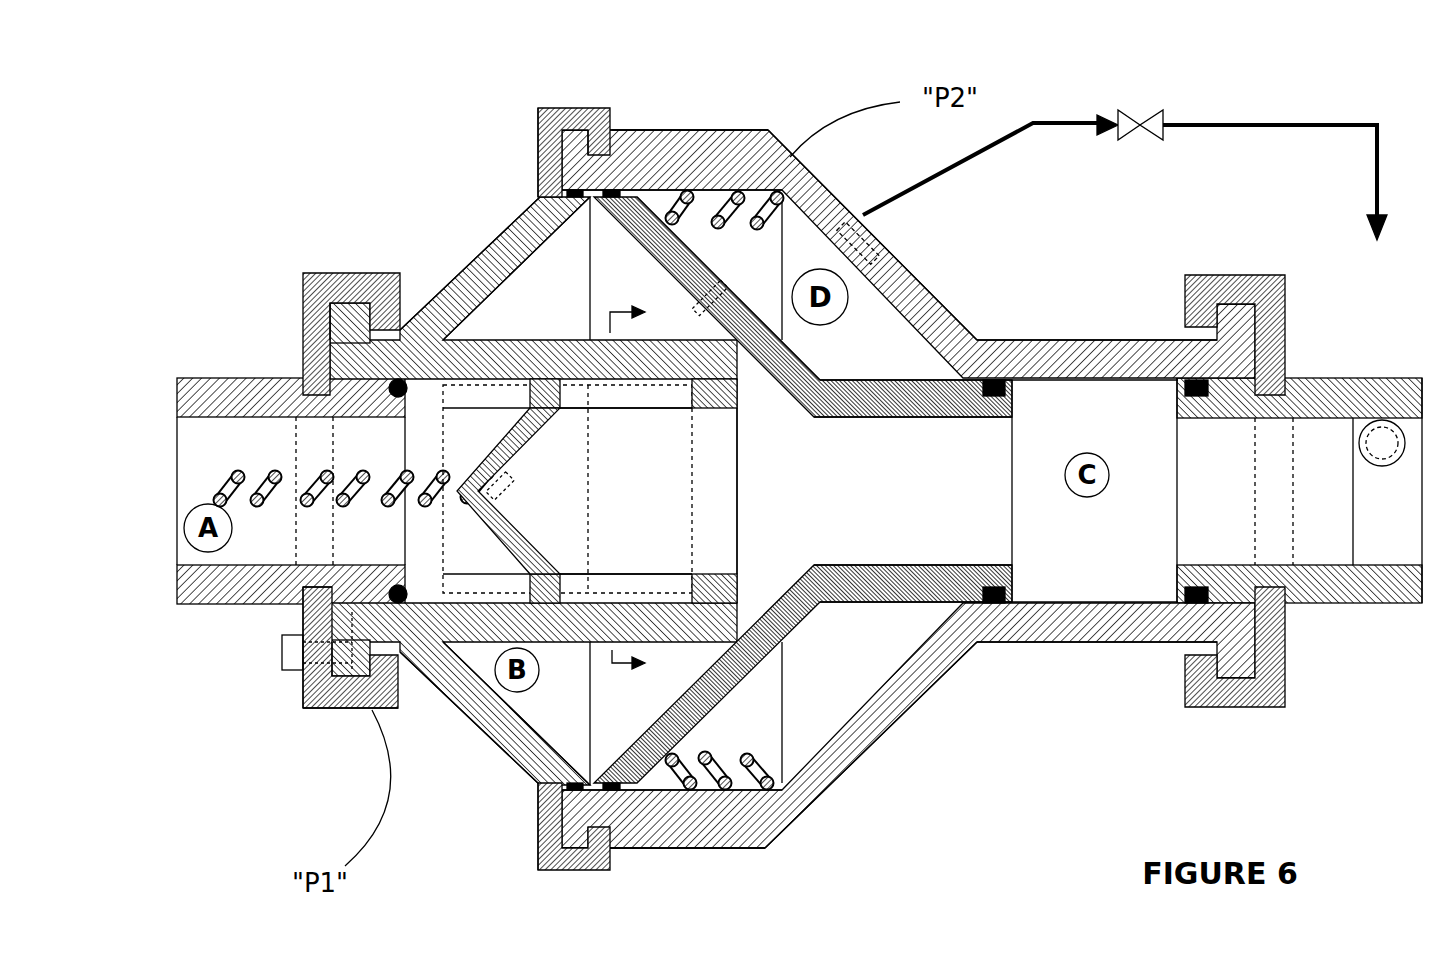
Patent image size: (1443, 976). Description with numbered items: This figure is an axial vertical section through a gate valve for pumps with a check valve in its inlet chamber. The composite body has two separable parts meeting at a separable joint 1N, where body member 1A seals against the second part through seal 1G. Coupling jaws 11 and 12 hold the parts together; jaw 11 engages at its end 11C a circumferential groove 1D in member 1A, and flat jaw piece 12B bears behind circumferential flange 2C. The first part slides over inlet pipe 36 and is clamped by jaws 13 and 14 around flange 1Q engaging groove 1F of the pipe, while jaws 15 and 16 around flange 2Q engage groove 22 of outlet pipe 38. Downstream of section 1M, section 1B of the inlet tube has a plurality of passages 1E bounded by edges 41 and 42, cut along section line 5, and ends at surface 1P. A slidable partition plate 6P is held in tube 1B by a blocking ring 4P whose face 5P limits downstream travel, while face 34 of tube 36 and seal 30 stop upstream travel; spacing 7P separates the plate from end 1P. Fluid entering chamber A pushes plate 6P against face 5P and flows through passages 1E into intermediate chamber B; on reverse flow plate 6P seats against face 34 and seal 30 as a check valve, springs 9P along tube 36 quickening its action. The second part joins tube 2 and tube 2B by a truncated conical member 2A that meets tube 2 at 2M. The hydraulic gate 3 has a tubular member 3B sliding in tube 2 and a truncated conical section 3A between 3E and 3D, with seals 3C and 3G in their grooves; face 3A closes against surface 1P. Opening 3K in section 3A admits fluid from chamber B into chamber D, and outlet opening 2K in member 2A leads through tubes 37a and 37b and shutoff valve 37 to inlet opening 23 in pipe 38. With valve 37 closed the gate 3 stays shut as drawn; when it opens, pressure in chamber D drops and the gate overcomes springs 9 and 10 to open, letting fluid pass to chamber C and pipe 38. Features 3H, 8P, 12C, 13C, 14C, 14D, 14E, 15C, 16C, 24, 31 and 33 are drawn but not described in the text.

The body member 1A is at (470, 690).
The tube section 1B is at (563, 640).
The circumferential groove 1D is at (533, 227).
The passages 1E is at (513, 418).
The circumferential groove 1F is at (297, 600).
The seal 1G is at (580, 763).
The tube section 1M is at (447, 337).
The separable joint 1N is at (583, 208).
The end surface 1P is at (742, 345).
The flange 1Q is at (335, 355).
The tube 2 is at (1052, 352).
The truncated conical member 2A is at (945, 318).
The tube 2B is at (748, 130).
The circumferential flange 2C is at (575, 140).
The outlet opening 2K is at (880, 252).
The tube end 2M is at (985, 340).
The flange 2Q is at (1252, 310).
The hydraulic gate 3 is at (822, 398).
The truncated conical section 3A is at (667, 703).
The tubular member 3B is at (985, 420).
The seal 3C is at (612, 208).
The end of conical section 3D is at (637, 160).
The end of conical section 3E is at (823, 372).
The seal 3G is at (987, 583).
The sleeve end 3H is at (1018, 410).
The opening 3K is at (712, 280).
The blocking ring 4P is at (740, 440).
The section line 5 is at (637, 489).
The face of blocking ring 5P is at (705, 405).
The slidable partition plate 6P is at (530, 440).
The distance 7P is at (573, 577).
The piston rod lower 8P is at (525, 585).
The spring 9 is at (683, 205).
The spring 9P is at (240, 494).
The spring 10 is at (700, 757).
The jaw member 11 is at (588, 110).
The jaw end 11C is at (545, 150).
The jaw member 12 is at (537, 848).
The flat jaw piece 12B is at (612, 856).
The lower clamp flange lip 12C is at (540, 765).
The coupling jaw 13 is at (310, 282).
The left flange bore line 13C is at (313, 420).
The coupling jaw 14 is at (335, 700).
The left flange inner face 14C is at (317, 590).
The flange bolt 14D is at (300, 660).
The flange bottom face 14E is at (310, 698).
The coupling jaw 15 is at (1233, 272).
The right flange bore line 15C is at (1268, 400).
The coupling jaw 16 is at (1250, 708).
The right flange bore line 16C is at (1262, 560).
The circumferential groove 22 is at (1295, 378).
The inlet opening 23 is at (1392, 443).
The chamber end wall 24 is at (1172, 592).
The seal 30 is at (385, 592).
The outlet seal 31 is at (1178, 395).
The body upper arm 33 is at (413, 330).
The face of tube 34 is at (405, 405).
The inlet pipe 36 is at (193, 378).
The shutoff valve 37 is at (1142, 118).
The tube 37a is at (955, 162).
The tube 37b is at (1378, 188).
The outlet pipe 38 is at (1330, 378).
The passage boundary 41 is at (650, 387).
The passage boundary 42 is at (630, 593).